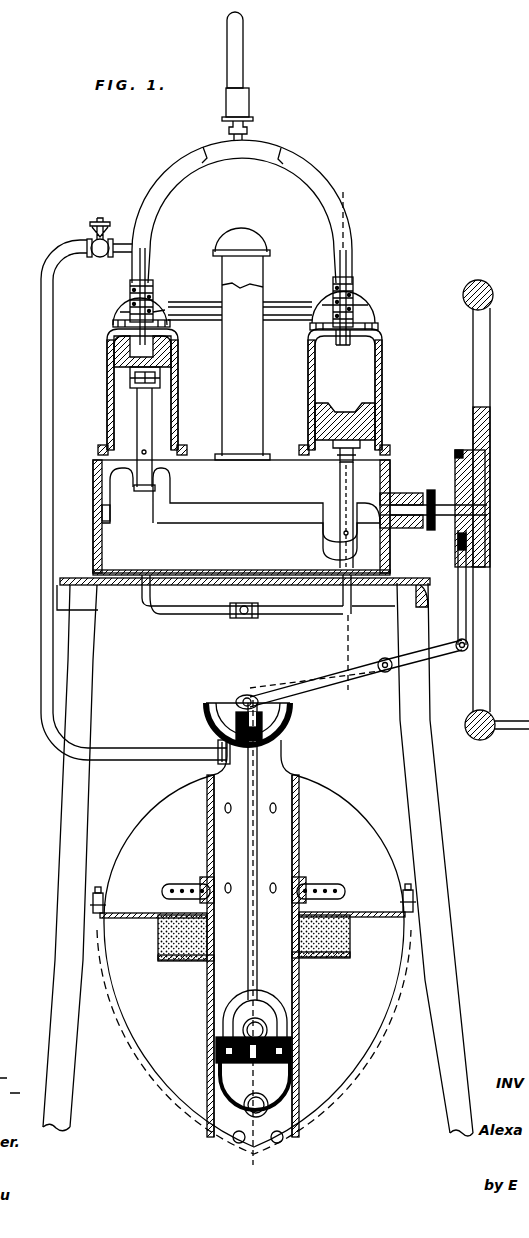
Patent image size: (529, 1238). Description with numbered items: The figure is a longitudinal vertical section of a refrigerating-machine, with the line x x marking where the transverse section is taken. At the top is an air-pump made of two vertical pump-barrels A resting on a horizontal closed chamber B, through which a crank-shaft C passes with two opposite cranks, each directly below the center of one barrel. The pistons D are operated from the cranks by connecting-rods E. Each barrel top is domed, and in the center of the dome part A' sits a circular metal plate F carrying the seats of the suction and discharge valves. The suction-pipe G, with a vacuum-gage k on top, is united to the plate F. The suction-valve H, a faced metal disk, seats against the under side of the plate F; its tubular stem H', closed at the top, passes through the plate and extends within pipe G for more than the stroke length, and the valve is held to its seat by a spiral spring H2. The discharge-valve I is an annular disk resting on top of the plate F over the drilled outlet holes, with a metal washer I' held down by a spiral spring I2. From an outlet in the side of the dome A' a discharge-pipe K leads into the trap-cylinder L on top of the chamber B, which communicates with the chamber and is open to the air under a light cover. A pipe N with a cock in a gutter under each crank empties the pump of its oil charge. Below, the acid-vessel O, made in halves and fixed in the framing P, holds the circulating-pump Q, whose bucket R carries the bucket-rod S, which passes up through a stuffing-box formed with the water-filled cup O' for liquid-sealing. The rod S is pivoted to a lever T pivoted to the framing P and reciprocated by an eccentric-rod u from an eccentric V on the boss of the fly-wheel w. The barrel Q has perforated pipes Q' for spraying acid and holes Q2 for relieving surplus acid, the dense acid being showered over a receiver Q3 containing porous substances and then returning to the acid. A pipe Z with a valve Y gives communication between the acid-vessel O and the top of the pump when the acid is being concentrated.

The vacuum-gage k is at (240, 76).
The suction-pipe G is at (242, 211).
The section line x is at (254, 677).
The valve Y is at (109, 228).
The pipe Z is at (41, 390).
The trap-cylinder L is at (241, 344).
The discharge-pipe K is at (172, 330).
The pump-barrel A is at (236, 392).
The circular metal plate F is at (113, 330).
The piston D is at (162, 376).
The connecting-rod E is at (137, 434).
The tubular stem of the suction-valve H' is at (266, 291).
The spiral spring H2 is at (131, 288).
The spiral spring I2 is at (154, 290).
The dome part A' is at (233, 304).
The metal washer I' is at (244, 296).
The discharge-valve I is at (236, 317).
The suction-valve H is at (336, 345).
The closed chamber B is at (241, 517).
The crank-shaft C is at (258, 517).
The eccentric V is at (455, 472).
The fly-wheel w is at (490, 589).
The eccentric-rod u is at (458, 582).
The lever T is at (368, 678).
The cup O' is at (257, 720).
The pipe N is at (280, 615).
The framing P is at (58, 836).
The acid-vessel O is at (254, 937).
The circulating-pump Q is at (263, 959).
The holes Q2 is at (299, 810).
The perforated pipes Q' is at (253, 884).
The receiver Q3 is at (157, 940).
The bucket-rod S is at (247, 928).
The bucket R is at (242, 1066).